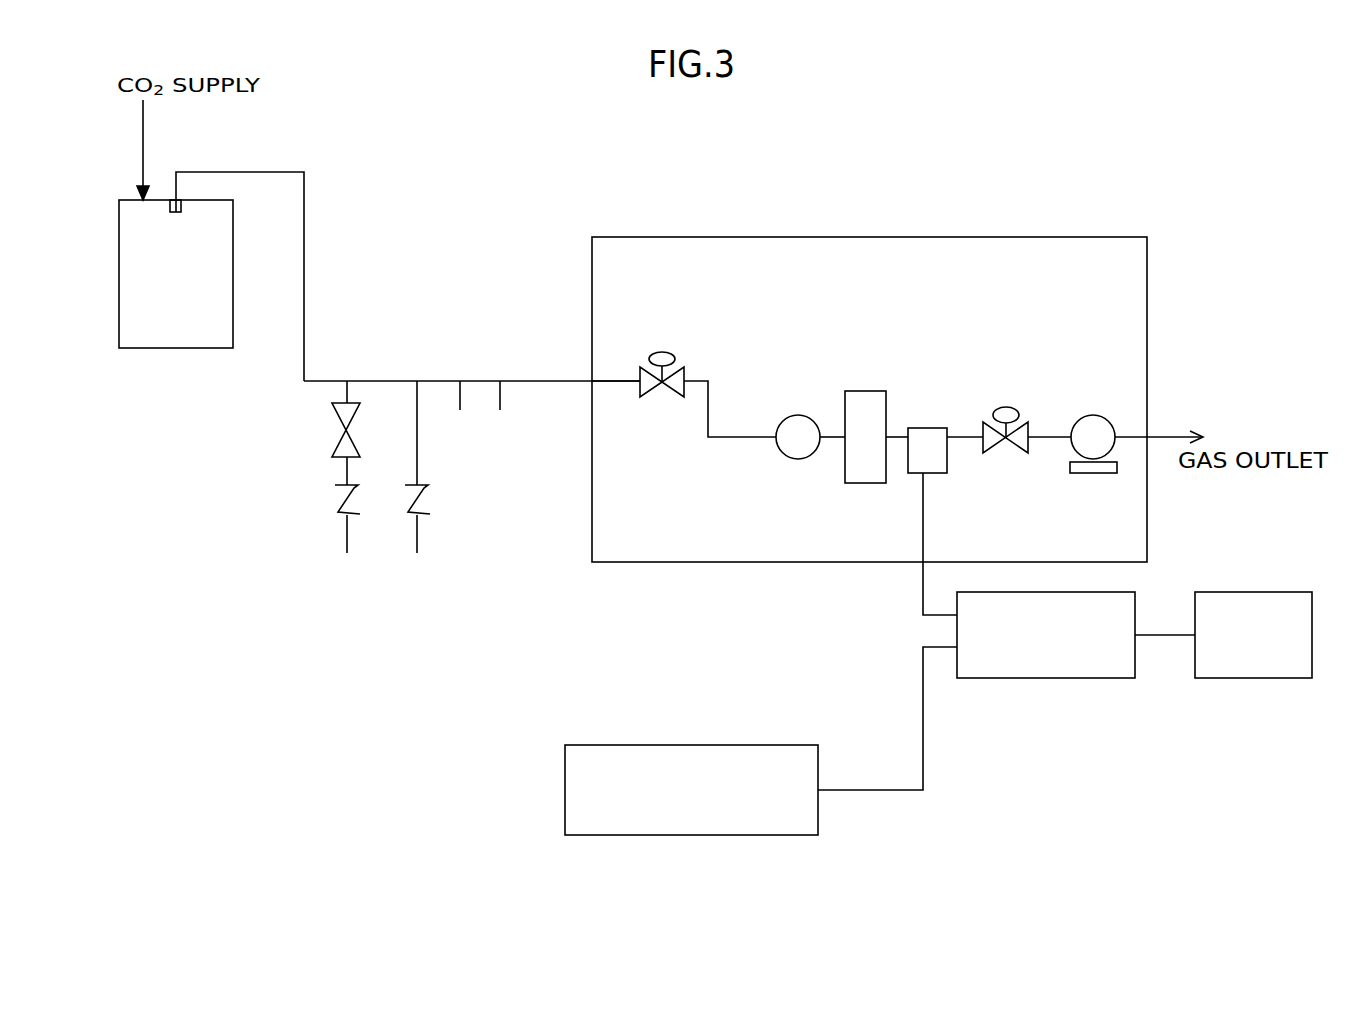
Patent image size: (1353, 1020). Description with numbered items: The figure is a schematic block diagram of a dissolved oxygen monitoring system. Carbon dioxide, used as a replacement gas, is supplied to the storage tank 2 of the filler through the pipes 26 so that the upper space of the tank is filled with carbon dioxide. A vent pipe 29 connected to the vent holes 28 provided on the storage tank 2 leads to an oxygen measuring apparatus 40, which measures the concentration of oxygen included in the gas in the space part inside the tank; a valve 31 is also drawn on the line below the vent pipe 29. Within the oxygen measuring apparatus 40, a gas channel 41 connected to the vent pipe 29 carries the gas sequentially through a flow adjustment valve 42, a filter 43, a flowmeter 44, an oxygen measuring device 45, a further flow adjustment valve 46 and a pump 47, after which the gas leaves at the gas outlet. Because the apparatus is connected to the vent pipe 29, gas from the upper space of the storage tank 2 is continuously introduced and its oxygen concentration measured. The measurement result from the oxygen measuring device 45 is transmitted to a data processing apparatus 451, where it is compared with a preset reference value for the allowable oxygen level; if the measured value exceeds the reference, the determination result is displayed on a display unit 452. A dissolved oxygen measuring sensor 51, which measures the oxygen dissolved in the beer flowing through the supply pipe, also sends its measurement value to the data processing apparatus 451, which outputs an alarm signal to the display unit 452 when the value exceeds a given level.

The storage tank 2 is at (165, 350).
The pipes 26 is at (143, 122).
The vent holes 28 is at (182, 206).
The vent pipe 29 is at (267, 171).
The valve 31 is at (326, 467).
The oxygen measuring apparatus 40 is at (700, 237).
The gas channel 41 is at (613, 384).
The flow adjustment valve 42 is at (646, 366).
The filter 43 is at (789, 414).
The flowmeter 44 is at (874, 390).
The oxygen measuring device 45 is at (938, 475).
The flow adjustment valve 46 is at (981, 422).
The pump 47 is at (1094, 415).
The dissolved oxygen measuring sensor 51 is at (820, 807).
The data processing apparatus 451 is at (1103, 680).
The display unit 452 is at (1254, 680).